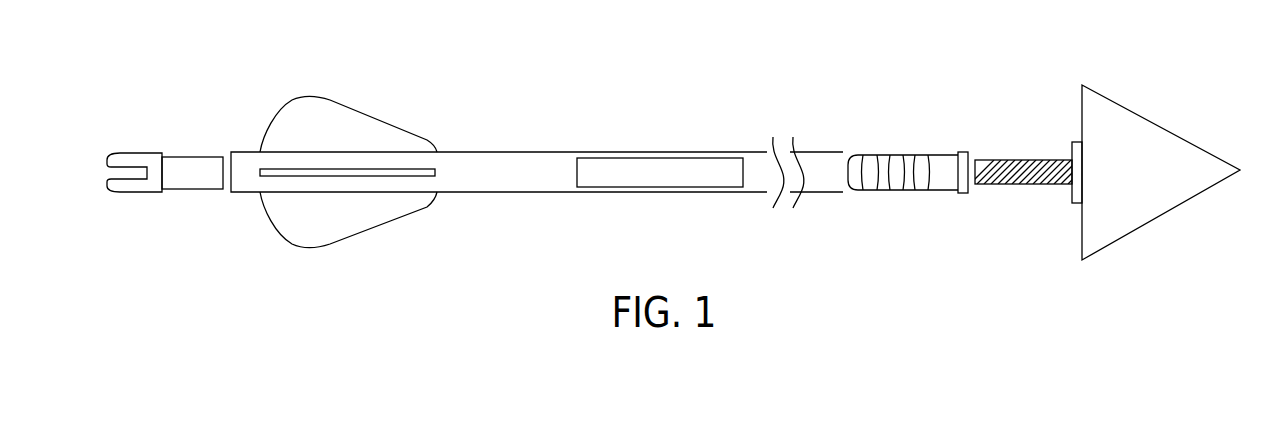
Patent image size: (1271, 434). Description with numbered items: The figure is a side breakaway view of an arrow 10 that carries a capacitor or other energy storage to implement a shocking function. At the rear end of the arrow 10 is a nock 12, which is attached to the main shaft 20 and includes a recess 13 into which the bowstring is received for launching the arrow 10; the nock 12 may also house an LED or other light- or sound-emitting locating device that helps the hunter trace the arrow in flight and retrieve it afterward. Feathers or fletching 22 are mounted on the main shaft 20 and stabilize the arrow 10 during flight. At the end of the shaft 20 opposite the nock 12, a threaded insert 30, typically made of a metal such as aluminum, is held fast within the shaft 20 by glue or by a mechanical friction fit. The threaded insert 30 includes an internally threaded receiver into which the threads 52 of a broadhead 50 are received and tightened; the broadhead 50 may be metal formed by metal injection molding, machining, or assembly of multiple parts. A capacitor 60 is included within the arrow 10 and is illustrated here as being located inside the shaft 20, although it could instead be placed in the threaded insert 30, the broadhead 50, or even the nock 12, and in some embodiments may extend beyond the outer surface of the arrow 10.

The arrow 10 is at (131, 54).
The nock 12 is at (185, 157).
The recess 13 is at (110, 172).
The main shaft 20 is at (482, 155).
The fletching 22 is at (377, 117).
The threaded insert 30 is at (964, 150).
The broadhead 50 is at (1123, 107).
The threads 52 is at (1040, 185).
The capacitor 60 is at (728, 162).